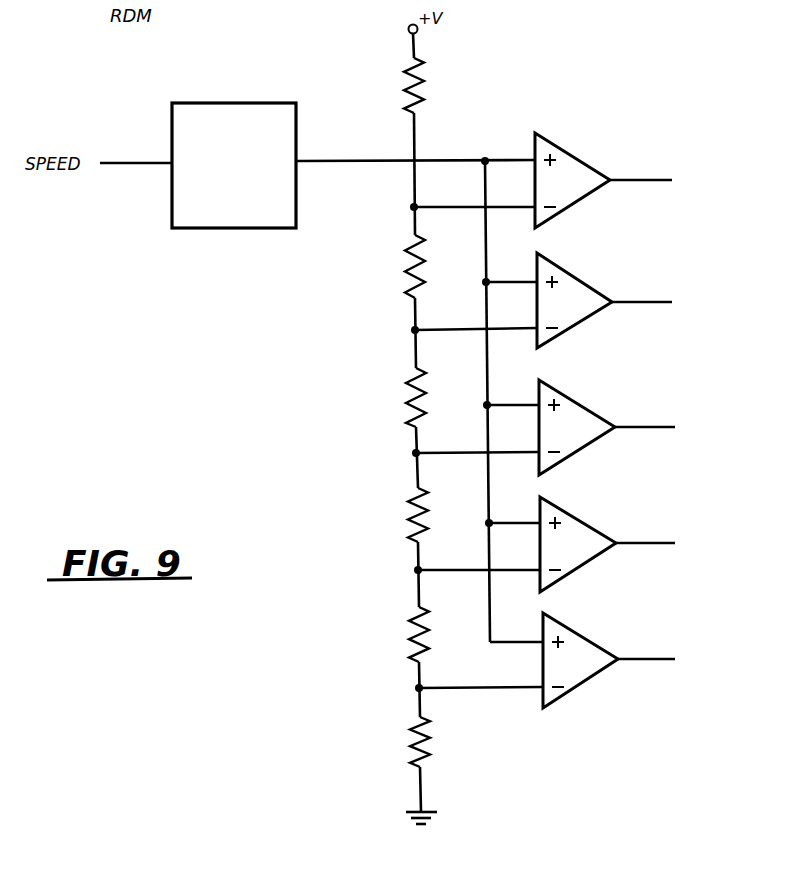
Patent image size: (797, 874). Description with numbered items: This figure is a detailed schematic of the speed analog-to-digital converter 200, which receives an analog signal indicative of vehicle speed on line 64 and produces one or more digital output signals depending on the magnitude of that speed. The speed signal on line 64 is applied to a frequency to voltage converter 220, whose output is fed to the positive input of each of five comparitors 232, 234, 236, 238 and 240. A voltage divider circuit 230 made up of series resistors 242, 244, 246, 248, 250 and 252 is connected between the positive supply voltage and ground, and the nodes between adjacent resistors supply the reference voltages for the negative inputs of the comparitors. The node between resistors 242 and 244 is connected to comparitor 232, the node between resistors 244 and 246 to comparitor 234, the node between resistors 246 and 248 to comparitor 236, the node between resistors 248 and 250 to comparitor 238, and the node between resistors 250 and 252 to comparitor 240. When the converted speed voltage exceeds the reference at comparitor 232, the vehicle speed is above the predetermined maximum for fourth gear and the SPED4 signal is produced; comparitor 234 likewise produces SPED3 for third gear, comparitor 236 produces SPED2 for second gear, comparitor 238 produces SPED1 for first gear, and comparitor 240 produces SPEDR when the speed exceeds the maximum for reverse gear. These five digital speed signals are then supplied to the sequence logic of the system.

The line 64 is at (134, 163).
The speed analog-to-digital converter 200 is at (280, 428).
The frequency to voltage converter 220 is at (220, 103).
The voltage divider circuit 230 is at (372, 287).
The comparitor 232 is at (574, 152).
The comparitor 234 is at (575, 272).
The comparitor 236 is at (575, 398).
The comparitor 238 is at (576, 515).
The comparitor 240 is at (575, 633).
The resistor 242 is at (406, 88).
The resistor 244 is at (407, 266).
The resistor 246 is at (410, 404).
The resistor 248 is at (410, 524).
The resistor 250 is at (410, 640).
The resistor 252 is at (410, 752).